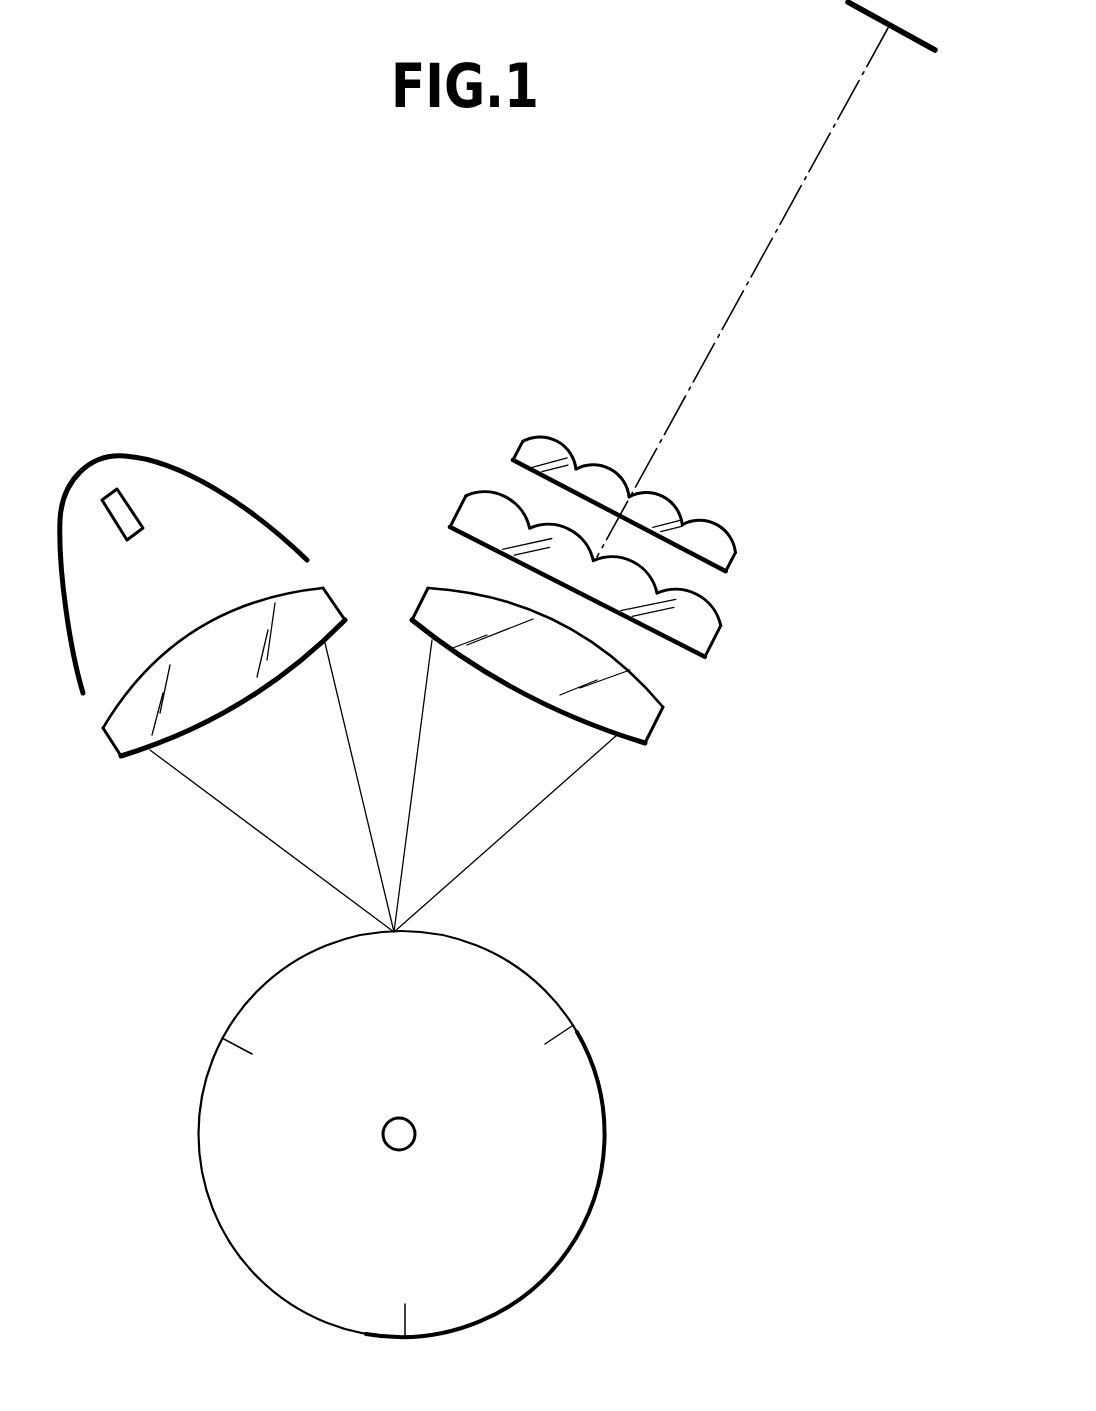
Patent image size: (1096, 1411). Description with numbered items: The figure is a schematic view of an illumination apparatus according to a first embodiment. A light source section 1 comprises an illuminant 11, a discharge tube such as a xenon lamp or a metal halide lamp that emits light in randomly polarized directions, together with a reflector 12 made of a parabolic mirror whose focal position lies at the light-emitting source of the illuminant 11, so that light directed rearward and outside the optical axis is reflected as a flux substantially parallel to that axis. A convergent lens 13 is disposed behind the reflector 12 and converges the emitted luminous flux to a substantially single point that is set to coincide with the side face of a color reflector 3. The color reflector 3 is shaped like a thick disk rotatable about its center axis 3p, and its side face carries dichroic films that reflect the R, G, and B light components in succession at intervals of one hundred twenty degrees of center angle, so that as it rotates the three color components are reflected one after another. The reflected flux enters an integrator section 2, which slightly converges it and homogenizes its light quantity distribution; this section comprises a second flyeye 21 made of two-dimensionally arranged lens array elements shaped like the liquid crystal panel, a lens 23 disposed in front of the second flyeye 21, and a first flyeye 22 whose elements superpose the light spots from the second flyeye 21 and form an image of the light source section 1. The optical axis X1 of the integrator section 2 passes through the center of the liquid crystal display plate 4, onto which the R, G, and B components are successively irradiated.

The light source section 1 is at (302, 487).
The integrator section 2 is at (763, 641).
The color reflector 3 is at (621, 1070).
The center axis 3p is at (415, 1134).
The liquid crystal display plate 4 is at (860, 12).
The illuminant 11 is at (112, 532).
The reflector 12 is at (188, 477).
The convergent lens 13 is at (104, 746).
The second flyeye 21 is at (462, 507).
The first flyeye 22 is at (522, 447).
The lens 23 is at (665, 723).
The optical axis X1 is at (706, 345).